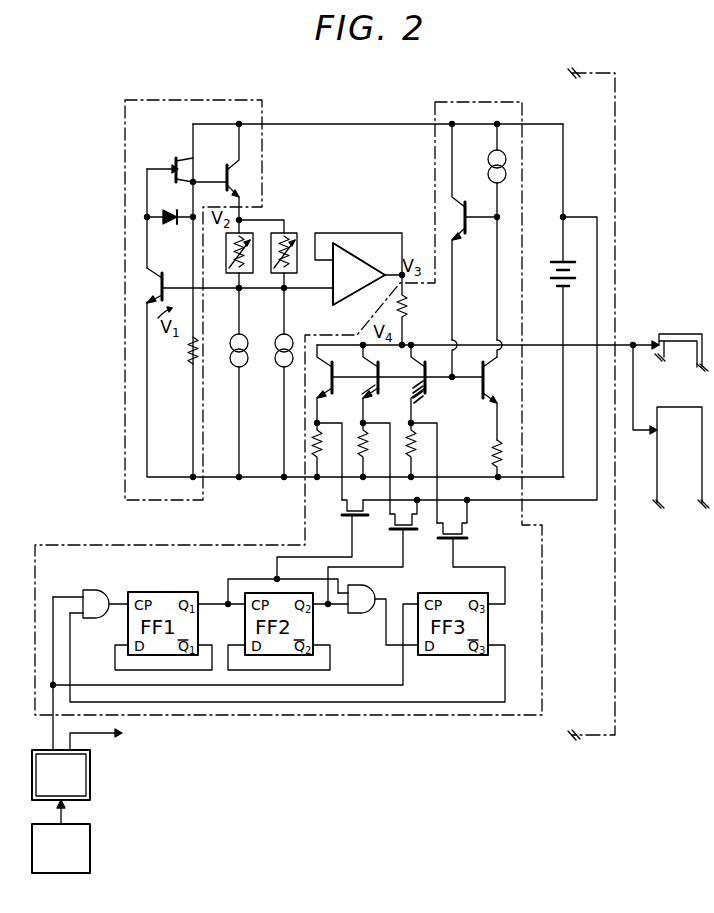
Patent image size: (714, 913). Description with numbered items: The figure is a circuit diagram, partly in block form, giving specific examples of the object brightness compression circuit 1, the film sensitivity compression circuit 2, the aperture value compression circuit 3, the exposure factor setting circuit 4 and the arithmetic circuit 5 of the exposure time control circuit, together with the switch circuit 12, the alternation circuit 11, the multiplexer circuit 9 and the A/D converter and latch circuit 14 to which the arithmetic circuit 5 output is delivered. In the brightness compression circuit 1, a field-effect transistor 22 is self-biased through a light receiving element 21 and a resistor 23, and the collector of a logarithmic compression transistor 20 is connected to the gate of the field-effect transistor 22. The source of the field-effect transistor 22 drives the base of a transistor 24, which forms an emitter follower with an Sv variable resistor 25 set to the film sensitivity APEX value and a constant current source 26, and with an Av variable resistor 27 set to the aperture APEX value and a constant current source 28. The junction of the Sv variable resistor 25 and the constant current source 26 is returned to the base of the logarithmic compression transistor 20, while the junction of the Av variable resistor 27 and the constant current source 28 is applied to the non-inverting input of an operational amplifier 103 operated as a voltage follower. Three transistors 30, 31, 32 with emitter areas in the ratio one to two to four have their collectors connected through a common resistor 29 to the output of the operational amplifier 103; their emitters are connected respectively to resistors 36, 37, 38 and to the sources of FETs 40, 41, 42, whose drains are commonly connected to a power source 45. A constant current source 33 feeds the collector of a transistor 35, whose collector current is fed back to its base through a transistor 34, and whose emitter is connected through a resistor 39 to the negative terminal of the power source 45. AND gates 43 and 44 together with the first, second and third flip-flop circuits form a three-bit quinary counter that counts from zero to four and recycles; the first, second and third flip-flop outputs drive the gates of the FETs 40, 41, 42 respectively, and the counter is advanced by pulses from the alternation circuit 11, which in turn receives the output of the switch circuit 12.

The object brightness compression circuit 1 is at (262, 114).
The film sensitivity compression circuit 2 is at (239, 277).
The aperture value compression circuit 3 is at (296, 257).
The exposure factor setting circuit 4 is at (435, 108).
The arithmetic circuit 5 is at (615, 108).
The multiplexer circuit 9 is at (672, 334).
The alternation circuit 11 is at (91, 775).
The switch circuit 12 is at (91, 845).
The A/D converter and latch circuit 14 is at (675, 407).
The logarithmic compression transistor 20 is at (160, 290).
The light receiving element 21 is at (160, 212).
The field-effect transistor 22 is at (178, 158).
The resistor 23 is at (190, 352).
The transistor 24 is at (227, 170).
The Sv variable resistor 25 is at (250, 273).
The constant current source 26 is at (233, 365).
The Av variable resistor 27 is at (296, 273).
The constant current source 28 is at (278, 365).
The common resistor 29 is at (409, 305).
The transistor 30 is at (333, 385).
The transistor 31 is at (386, 385).
The transistor 32 is at (433, 385).
The constant current source 33 is at (488, 164).
The transistor 34 is at (463, 212).
The transistor 35 is at (500, 378).
The resistor 36 is at (311, 447).
The resistor 37 is at (358, 456).
The resistor 38 is at (418, 446).
The resistor 39 is at (503, 450).
The FET 40 is at (344, 513).
The FET 41 is at (394, 522).
The FET 42 is at (460, 546).
The AND gate 43 is at (100, 590).
The AND gate 44 is at (368, 586).
The power source 45 is at (552, 268).
The operational amplifier 103 is at (362, 247).